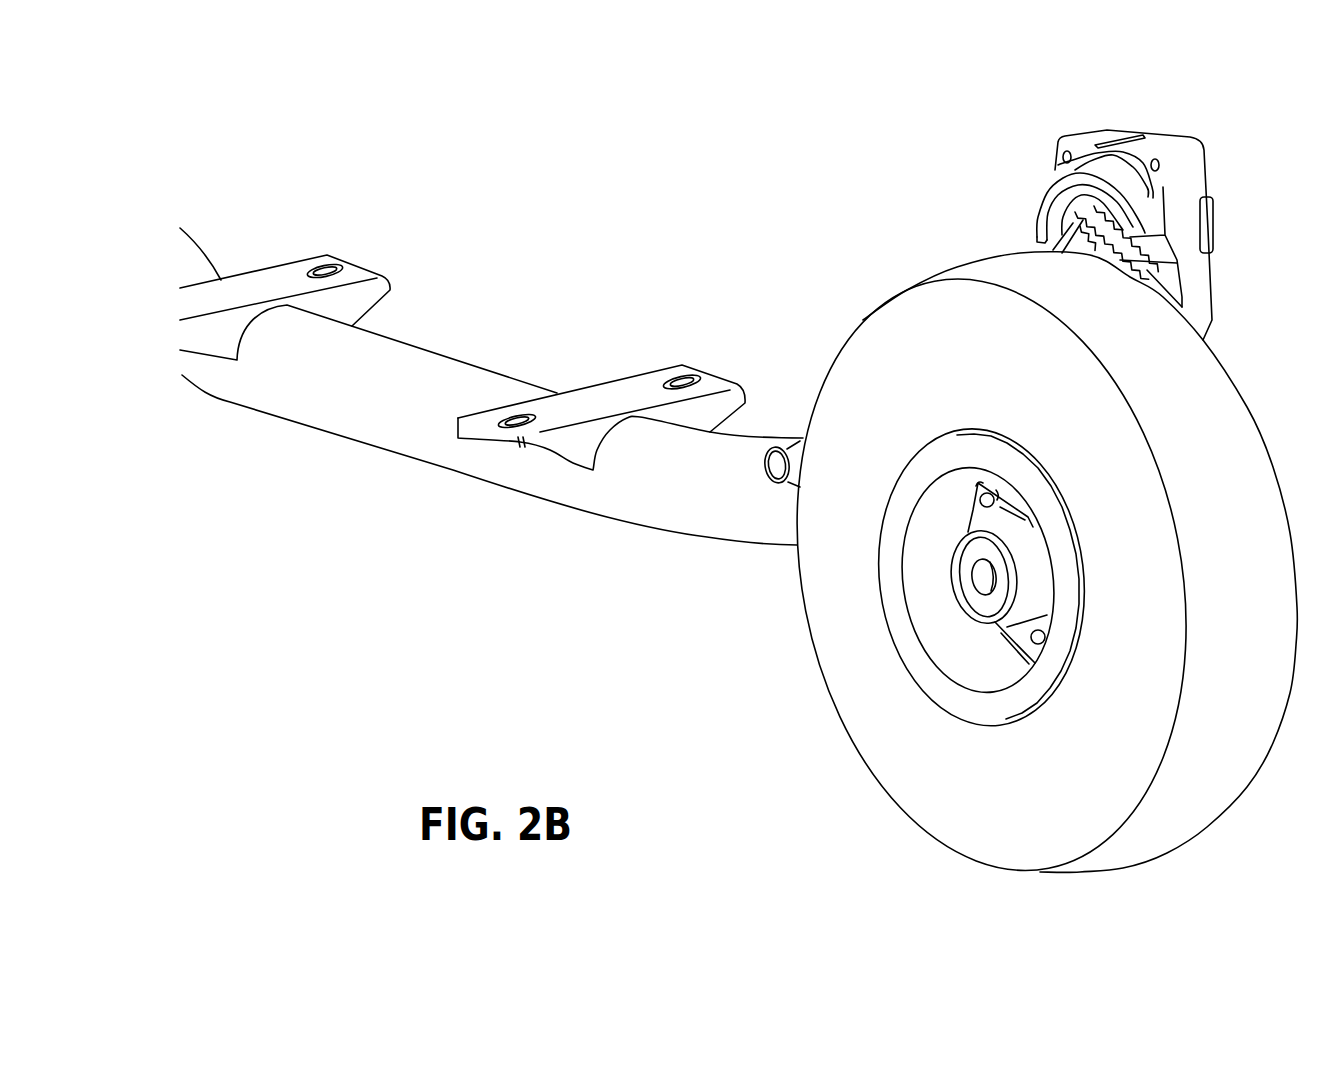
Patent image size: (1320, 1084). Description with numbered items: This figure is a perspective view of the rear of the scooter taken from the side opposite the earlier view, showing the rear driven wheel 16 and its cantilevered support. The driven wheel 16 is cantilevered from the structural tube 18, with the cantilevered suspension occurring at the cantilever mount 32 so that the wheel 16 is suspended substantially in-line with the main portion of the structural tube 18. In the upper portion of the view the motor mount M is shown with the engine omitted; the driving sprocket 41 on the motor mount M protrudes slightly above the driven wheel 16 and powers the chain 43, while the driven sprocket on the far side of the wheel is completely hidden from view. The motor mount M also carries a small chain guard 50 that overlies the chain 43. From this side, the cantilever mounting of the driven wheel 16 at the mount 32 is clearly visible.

The driven wheel 16 is at (860, 738).
The structural tube 18 is at (503, 487).
The cantilever mount 32 is at (783, 547).
The driving sprocket 41 is at (1033, 235).
The chain 43 is at (1178, 263).
The chain guard 50 is at (1083, 137).
The motor mount M is at (1215, 232).